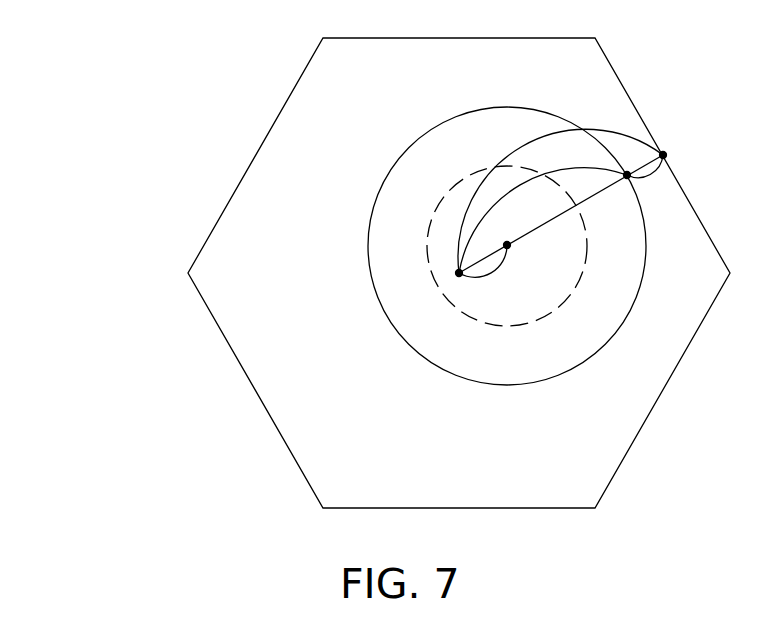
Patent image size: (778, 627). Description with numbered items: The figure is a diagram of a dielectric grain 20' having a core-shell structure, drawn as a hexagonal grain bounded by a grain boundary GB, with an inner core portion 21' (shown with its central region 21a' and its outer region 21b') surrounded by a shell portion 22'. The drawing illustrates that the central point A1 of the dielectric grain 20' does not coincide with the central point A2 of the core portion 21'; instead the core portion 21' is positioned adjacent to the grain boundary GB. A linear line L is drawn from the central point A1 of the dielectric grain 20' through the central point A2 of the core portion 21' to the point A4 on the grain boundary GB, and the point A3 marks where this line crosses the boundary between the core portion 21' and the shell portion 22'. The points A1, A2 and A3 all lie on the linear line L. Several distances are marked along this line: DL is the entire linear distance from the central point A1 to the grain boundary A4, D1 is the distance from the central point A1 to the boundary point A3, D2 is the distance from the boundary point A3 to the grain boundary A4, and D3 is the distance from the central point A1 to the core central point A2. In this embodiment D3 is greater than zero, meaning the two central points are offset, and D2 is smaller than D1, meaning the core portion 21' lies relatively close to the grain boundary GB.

The dielectric grain 20' is at (331, 246).
The core portion 21' is at (329, 246).
The central light emitting region 21a' is at (286, 219).
The peripheral light emitting region 21b' is at (260, 270).
The shell portion 22' is at (186, 326).
The grain boundary GB is at (643, 118).
The linear line L is at (549, 220).
The central point of the dielectric grain A1 is at (461, 285).
The central point of the core portion A2 is at (502, 235).
The boundary point A3 is at (619, 164).
The grain boundary point A4 is at (680, 155).
The first linear distance D1 is at (543, 220).
The second linear distance D2 is at (651, 180).
The third linear distance D3 is at (487, 272).
The entire linear distance DL is at (560, 196).